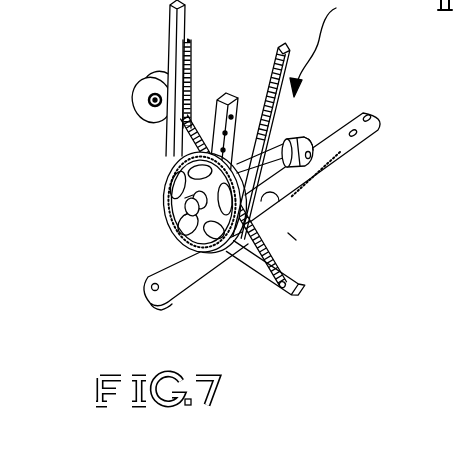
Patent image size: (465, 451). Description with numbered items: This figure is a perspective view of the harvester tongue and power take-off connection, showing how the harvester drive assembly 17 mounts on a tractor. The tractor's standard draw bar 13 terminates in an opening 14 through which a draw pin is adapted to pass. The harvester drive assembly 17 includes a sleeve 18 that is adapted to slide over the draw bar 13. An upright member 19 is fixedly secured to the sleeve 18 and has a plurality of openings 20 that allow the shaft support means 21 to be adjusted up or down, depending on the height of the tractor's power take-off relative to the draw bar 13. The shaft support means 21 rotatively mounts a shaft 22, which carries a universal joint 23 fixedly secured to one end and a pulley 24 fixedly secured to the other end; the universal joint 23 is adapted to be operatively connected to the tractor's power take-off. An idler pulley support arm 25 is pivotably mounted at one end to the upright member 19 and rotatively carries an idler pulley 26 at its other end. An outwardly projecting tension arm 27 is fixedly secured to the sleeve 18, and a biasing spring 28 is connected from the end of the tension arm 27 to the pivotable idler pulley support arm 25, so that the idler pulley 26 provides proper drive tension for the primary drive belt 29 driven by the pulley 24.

The draw bar 13 is at (365, 157).
The opening 14 is at (168, 293).
The harvester drive assembly 17 is at (326, 48).
The sleeve 18 is at (257, 227).
The upright member 19 is at (263, 110).
The openings 20 is at (217, 128).
The shaft support means 21 is at (268, 209).
The shaft 22 is at (281, 137).
The universal joint 23 is at (308, 150).
The pulley 24 is at (172, 206).
The idler pulley support arm 25 is at (167, 150).
The idler pulley 26 is at (149, 100).
The tension arm 27 is at (293, 297).
The biasing spring 28 is at (293, 238).
The primary drive belt 29 is at (170, 20).